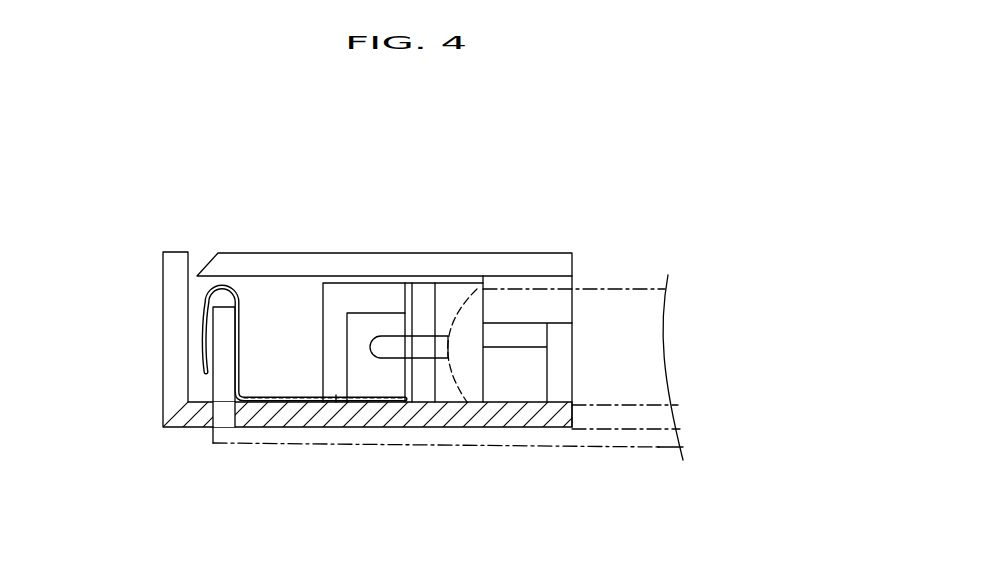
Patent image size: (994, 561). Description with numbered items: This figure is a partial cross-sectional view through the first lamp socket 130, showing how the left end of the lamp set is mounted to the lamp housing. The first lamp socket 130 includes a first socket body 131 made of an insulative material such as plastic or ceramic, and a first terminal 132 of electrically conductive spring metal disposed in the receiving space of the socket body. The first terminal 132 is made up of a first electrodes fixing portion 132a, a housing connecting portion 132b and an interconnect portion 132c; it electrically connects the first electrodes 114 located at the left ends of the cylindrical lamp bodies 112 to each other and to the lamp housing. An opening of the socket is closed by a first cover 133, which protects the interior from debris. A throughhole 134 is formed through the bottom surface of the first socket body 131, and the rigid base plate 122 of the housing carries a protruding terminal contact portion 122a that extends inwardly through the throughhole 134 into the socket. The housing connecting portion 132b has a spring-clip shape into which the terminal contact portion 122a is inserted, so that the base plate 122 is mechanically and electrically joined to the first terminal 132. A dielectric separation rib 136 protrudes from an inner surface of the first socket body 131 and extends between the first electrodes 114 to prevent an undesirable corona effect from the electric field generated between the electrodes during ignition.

The lamp body 112 is at (628, 289).
The first electrode 114 is at (422, 336).
The base plate 122 is at (408, 445).
The terminal contact portion 122a is at (214, 380).
The first lamp socket 130 is at (428, 341).
The first socket body 131 is at (168, 332).
The first terminal 132 is at (337, 263).
The first electrodes fixing portion 132a is at (403, 283).
The housing connecting portion 132b is at (207, 286).
The interconnect portion 132c is at (286, 397).
The first cover 133 is at (522, 252).
The throughhole 134 is at (228, 420).
The dielectric separation rib 136 is at (336, 395).